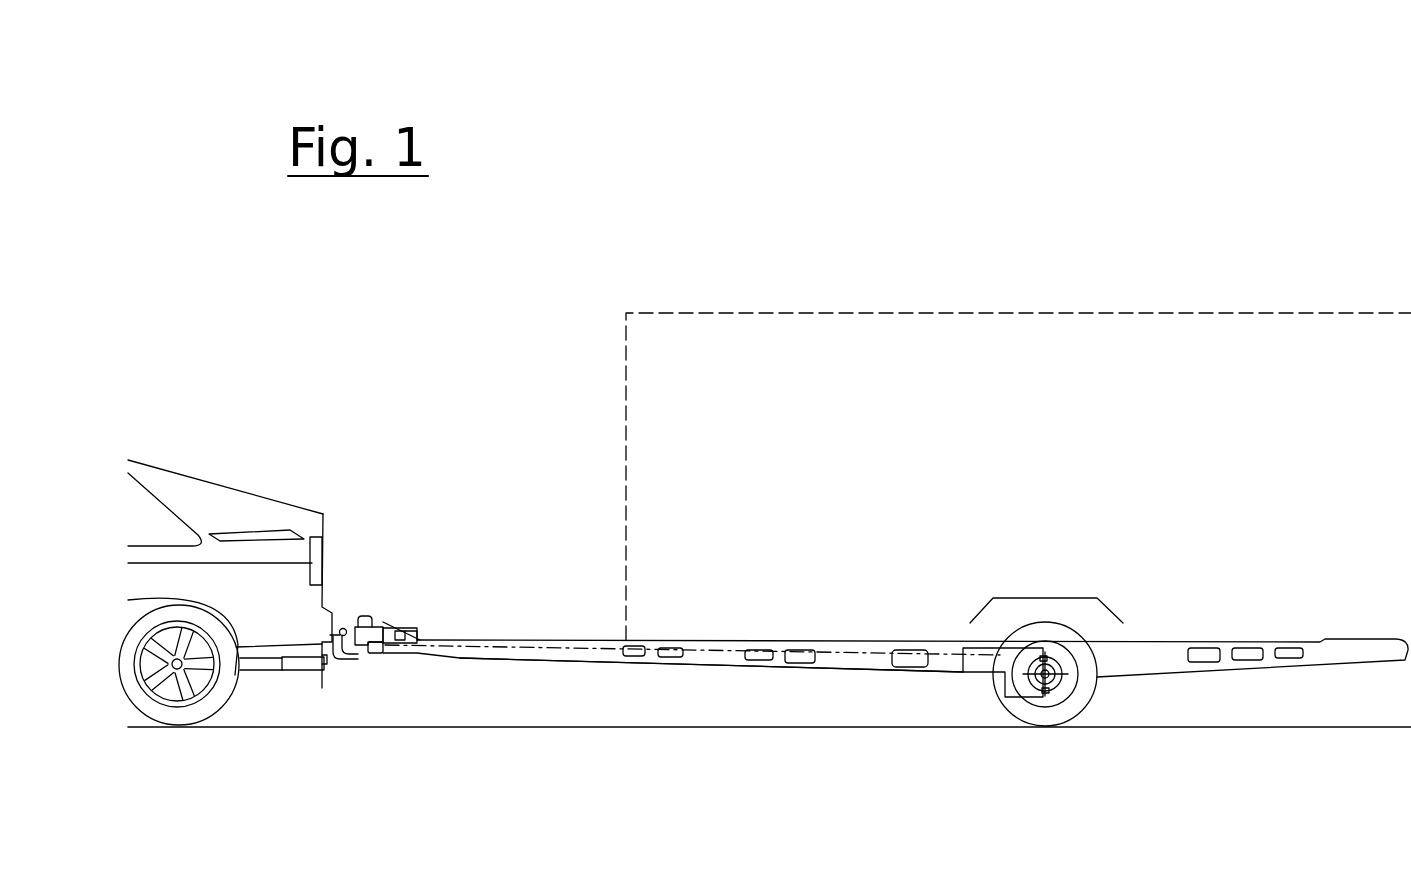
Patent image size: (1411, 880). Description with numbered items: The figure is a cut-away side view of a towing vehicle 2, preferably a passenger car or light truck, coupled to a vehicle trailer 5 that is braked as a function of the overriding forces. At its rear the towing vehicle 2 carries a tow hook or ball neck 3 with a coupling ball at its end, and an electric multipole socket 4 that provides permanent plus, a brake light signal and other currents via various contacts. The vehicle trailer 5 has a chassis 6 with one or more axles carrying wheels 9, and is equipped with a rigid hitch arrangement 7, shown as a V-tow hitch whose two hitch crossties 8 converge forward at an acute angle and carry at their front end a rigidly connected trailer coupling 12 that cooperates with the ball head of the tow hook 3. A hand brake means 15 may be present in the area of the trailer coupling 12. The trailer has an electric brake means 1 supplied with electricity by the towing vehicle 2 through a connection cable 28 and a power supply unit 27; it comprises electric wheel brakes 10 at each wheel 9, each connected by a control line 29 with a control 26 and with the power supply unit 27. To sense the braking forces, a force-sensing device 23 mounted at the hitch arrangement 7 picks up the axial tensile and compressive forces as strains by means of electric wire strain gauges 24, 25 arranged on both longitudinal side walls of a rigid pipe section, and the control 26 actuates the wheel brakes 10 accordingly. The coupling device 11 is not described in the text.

The electric brake means 1 is at (534, 449).
The towing vehicle 2 is at (163, 487).
The ball neck 3 is at (320, 623).
The electric multipole socket 4 is at (322, 688).
The vehicle trailer 5 is at (1115, 467).
The chassis 6 is at (878, 643).
The hitch arrangement 7 is at (553, 628).
The hitch crossties 8 is at (575, 660).
The wheels 9 is at (1023, 708).
The electric wheel brakes 10 is at (1043, 661).
The trailer coupling device 11 is at (366, 591).
The trailer coupling 12 is at (372, 625).
The hand brake means 15 is at (415, 628).
The force-sensing device 23 is at (385, 622).
The electric wire strain gauge 24 is at (400, 635).
The electric wire strain gauge 25 is at (411, 635).
The control 26 is at (378, 650).
The power supply unit 27 is at (350, 660).
The connection cable 28 is at (345, 647).
The control line 29 is at (838, 658).